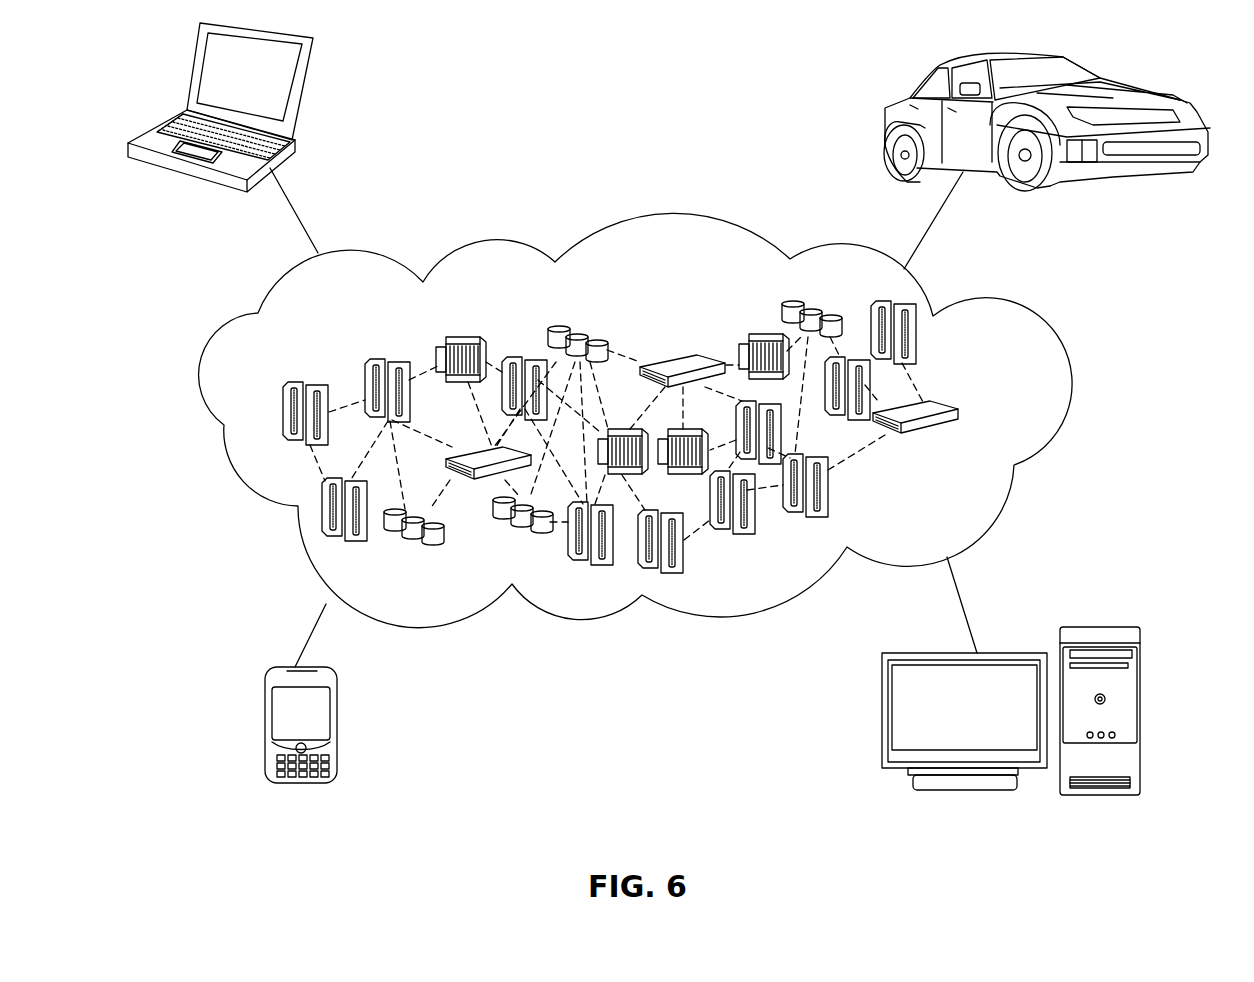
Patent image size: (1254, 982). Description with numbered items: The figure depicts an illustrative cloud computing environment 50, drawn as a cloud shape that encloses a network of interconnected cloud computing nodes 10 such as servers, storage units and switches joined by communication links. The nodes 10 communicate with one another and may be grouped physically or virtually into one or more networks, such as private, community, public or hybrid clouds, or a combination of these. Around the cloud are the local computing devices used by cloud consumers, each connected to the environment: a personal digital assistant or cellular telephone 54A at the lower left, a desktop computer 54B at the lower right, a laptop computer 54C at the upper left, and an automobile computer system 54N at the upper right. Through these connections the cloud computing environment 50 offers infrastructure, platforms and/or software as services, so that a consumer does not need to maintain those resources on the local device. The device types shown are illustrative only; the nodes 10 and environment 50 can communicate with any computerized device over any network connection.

The cloud computing node 10 is at (997, 415).
The cloud computing environment 50 is at (1023, 325).
The personal digital assistant or cellular telephone 54A is at (265, 728).
The desktop computer 54B is at (1105, 627).
The laptop computer 54C is at (307, 92).
The automobile computer system 54N is at (892, 110).